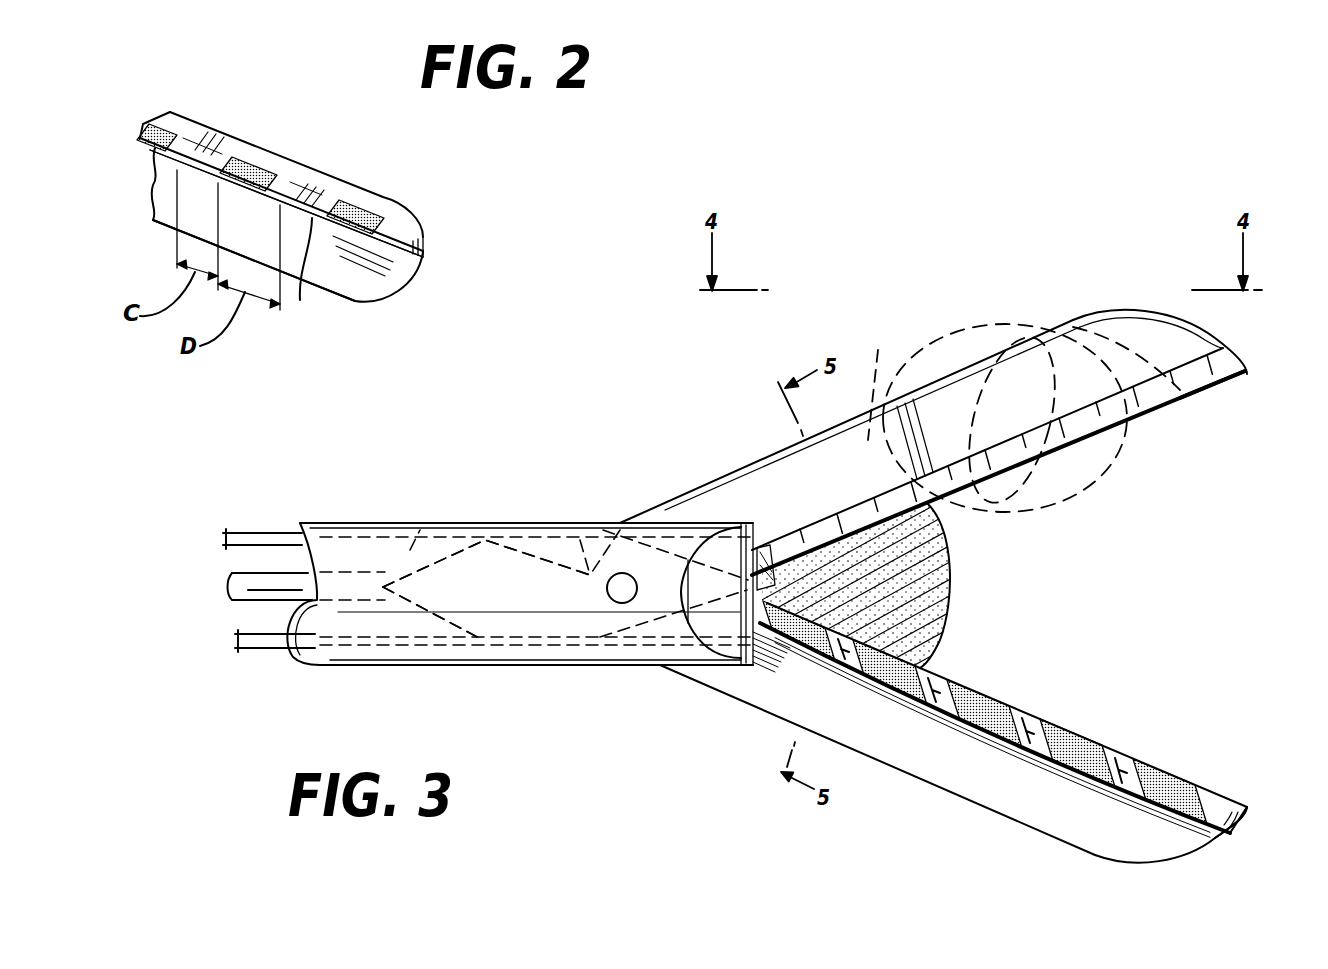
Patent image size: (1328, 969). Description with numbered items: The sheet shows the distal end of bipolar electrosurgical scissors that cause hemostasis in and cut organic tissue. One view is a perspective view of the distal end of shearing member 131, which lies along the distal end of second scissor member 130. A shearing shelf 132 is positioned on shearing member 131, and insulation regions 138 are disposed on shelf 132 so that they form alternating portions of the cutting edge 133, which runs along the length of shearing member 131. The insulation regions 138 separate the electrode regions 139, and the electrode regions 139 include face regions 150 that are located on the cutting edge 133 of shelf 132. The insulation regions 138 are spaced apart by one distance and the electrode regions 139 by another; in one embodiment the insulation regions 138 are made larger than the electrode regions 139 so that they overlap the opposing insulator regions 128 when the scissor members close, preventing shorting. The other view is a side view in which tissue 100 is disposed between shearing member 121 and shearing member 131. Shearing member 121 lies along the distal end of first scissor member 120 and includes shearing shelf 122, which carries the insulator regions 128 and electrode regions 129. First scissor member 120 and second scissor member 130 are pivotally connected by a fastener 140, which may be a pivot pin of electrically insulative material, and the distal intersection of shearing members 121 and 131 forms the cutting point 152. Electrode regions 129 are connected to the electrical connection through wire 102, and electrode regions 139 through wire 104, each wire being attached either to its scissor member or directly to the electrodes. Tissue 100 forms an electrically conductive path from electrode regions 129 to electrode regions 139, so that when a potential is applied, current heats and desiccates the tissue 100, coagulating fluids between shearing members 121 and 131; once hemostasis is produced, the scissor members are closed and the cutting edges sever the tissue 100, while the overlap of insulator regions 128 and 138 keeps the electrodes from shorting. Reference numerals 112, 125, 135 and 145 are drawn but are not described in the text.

In FIG. 3, the tissue 100 is at (918, 572).
In FIG. 3, the wire 102 is at (250, 647).
In FIG. 3, the wire 104 is at (257, 533).
In FIG. 3, the elongated tube 112 is at (331, 522).
In FIG. 3, the first scissor member 120 is at (710, 500).
In FIG. 3, the shearing member 121 is at (1137, 312).
In FIG. 3, the shearing shelf 122 is at (1207, 380).
In FIG. 3, the center rod 125 is at (230, 578).
In FIG. 3, the insulator regions 128 is at (1270, 380).
In FIG. 3, the electrode regions 129 is at (1031, 412).
In FIG. 3, the second scissor member 130 is at (692, 665).
In FIG. 2, the shearing member 131 is at (377, 277).
In FIG. 3, the shearing member 131 is at (1190, 835).
In FIG. 2, the shearing shelf 132 is at (417, 223).
In FIG. 3, the shearing shelf 132 is at (1237, 790).
In FIG. 2, the cutting edge 133 is at (300, 300).
In FIG. 3, the linkage 135 is at (424, 522).
In FIG. 2, the insulation regions 138 is at (148, 133).
In FIG. 3, the insulation regions 138 is at (790, 625).
In FIG. 2, the electrode regions 139 is at (200, 135).
In FIG. 3, the electrode regions 139 is at (1010, 735).
In FIG. 3, the fastener 140 is at (617, 600).
In FIG. 3, the linkage 145 is at (423, 640).
In FIG. 2, the face regions 150 is at (293, 185).
In FIG. 3, the cutting point 152 is at (770, 580).